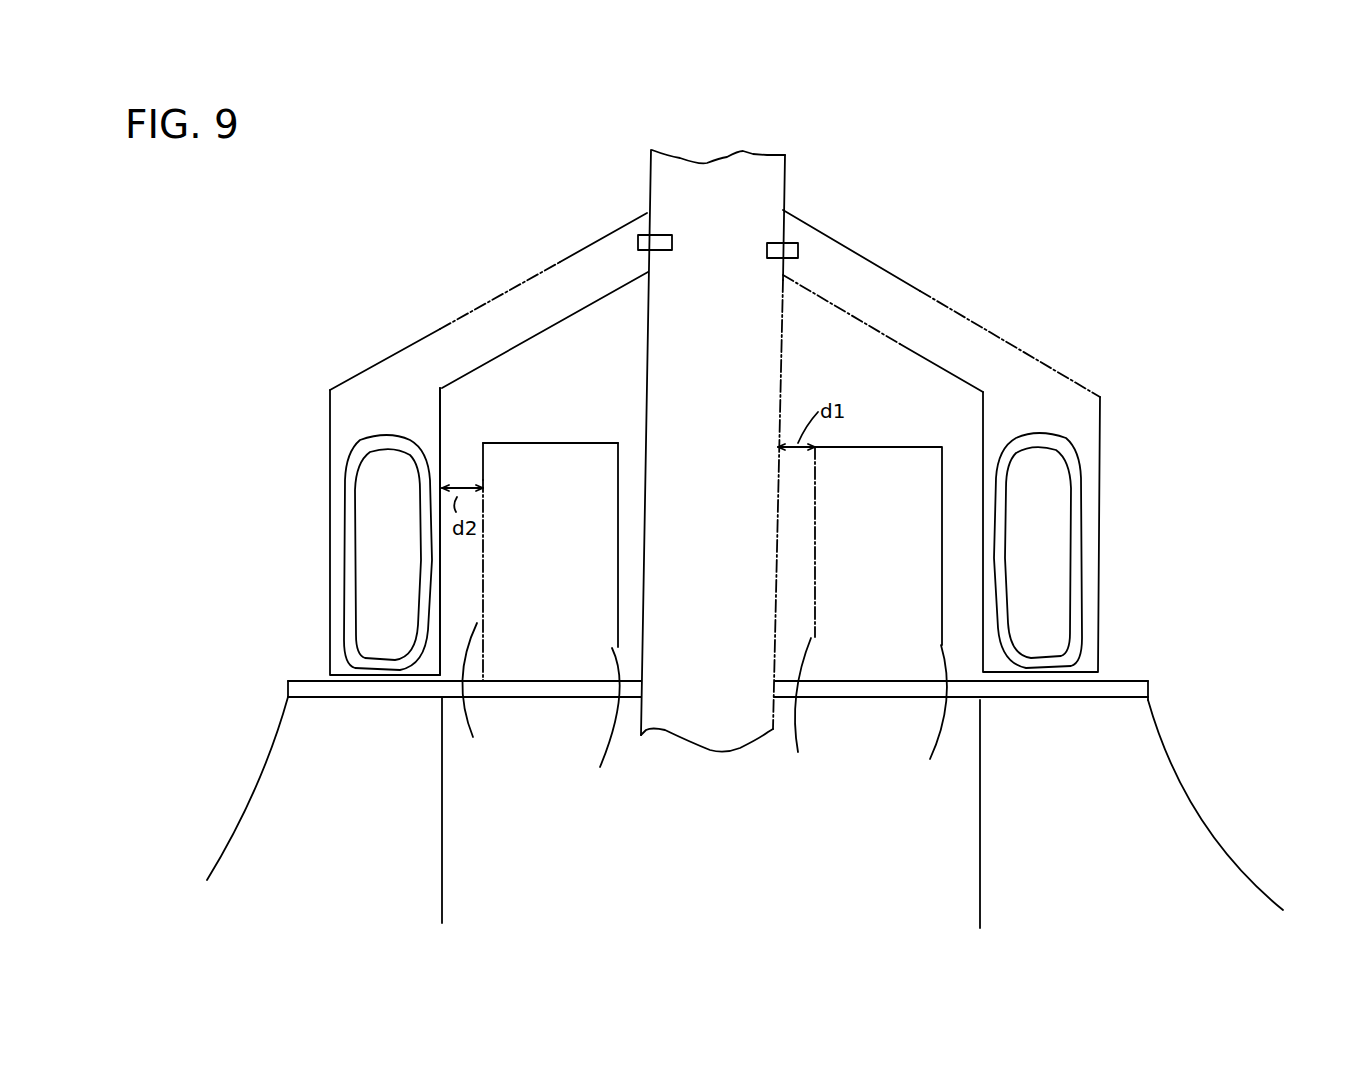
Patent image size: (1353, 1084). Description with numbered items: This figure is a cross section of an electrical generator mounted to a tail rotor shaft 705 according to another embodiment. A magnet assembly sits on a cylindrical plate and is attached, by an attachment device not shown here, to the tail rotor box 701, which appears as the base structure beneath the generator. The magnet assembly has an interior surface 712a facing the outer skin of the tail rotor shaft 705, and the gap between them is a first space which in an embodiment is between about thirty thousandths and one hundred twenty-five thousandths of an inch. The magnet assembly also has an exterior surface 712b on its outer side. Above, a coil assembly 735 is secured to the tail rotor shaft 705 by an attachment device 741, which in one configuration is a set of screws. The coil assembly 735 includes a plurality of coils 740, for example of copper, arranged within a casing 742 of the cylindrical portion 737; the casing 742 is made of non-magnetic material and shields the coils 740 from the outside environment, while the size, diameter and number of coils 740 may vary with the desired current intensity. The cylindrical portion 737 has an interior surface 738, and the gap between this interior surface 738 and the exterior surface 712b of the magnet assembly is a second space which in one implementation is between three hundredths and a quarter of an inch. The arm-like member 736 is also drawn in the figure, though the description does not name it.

The tail rotor shaft 705 is at (757, 167).
The attachment device 741 is at (657, 242).
The upper arm 736 is at (918, 293).
The casing 742 is at (1015, 360).
The coil assembly 735 is at (1090, 425).
The coils 740 is at (1078, 483).
The cylindrical portion 737 is at (330, 473).
The interior surface 738 is at (443, 432).
The interior surface 712a is at (707, 628).
The exterior surface 712b is at (709, 620).
The tail rotor box 701 is at (287, 777).